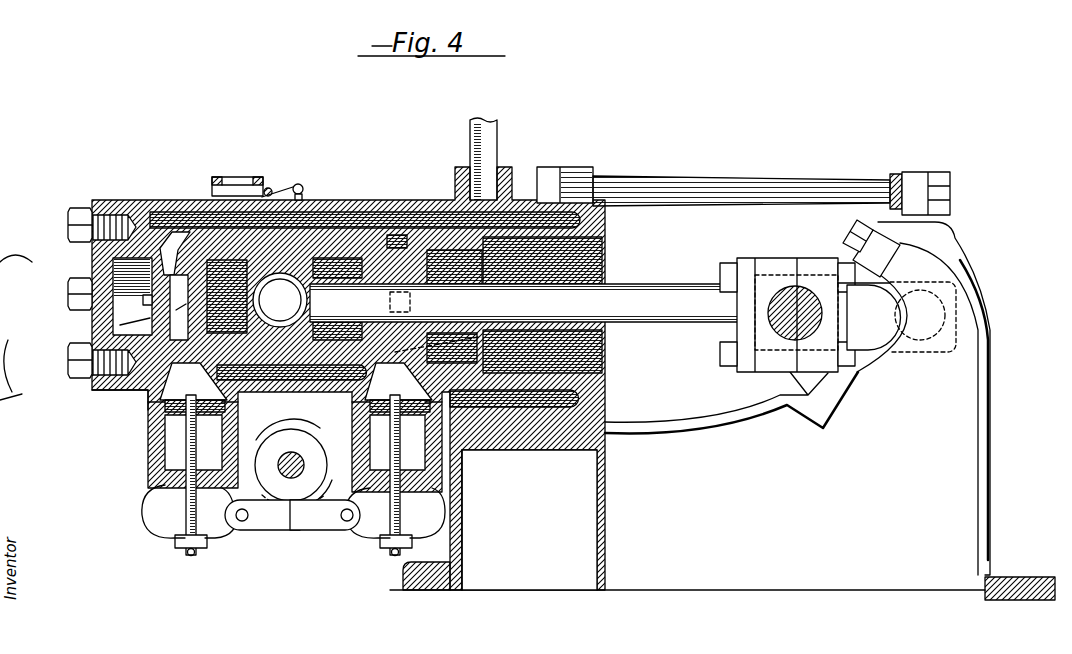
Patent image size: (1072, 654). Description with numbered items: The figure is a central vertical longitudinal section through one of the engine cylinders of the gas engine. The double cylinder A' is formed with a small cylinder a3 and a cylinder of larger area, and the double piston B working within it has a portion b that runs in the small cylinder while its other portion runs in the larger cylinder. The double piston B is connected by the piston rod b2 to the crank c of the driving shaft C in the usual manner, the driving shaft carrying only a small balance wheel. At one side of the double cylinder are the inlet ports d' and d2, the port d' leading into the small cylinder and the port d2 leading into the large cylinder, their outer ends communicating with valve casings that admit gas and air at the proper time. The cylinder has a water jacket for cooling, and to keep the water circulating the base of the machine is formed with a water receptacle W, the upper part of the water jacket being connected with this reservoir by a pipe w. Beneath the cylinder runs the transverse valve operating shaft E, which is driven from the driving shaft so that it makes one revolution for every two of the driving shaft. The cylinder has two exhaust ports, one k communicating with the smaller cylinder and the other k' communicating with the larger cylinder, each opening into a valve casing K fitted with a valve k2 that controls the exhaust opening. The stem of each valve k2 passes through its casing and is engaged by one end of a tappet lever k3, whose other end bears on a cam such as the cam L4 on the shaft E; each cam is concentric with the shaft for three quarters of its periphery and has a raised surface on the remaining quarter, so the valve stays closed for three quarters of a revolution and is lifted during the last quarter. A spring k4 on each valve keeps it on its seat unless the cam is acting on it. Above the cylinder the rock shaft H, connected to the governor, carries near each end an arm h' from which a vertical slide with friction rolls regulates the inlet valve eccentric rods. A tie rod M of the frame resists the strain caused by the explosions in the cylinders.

The double cylinder A' is at (86, 293).
The small cylinder a3 is at (172, 248).
The rock shaft H is at (268, 188).
The arm h' is at (299, 174).
The pipe w is at (484, 140).
The tie rod M is at (712, 178).
The inlet port d' is at (96, 301).
The piston portion b is at (238, 268).
The double piston B is at (434, 261).
The piston rod b2 is at (525, 299).
The inlet port d2 is at (498, 351).
The water receptacle W is at (529, 520).
The exhaust port k' is at (477, 520).
The valve casing K is at (148, 452).
The exhaust port k is at (120, 404).
The exhaust valve k2 is at (150, 470).
The spring k4 is at (143, 510).
The valve operating shaft E is at (285, 450).
The cam L4 is at (295, 485).
The tappet lever k3 is at (228, 532).
The driving shaft C is at (813, 315).
The crank c is at (923, 317).